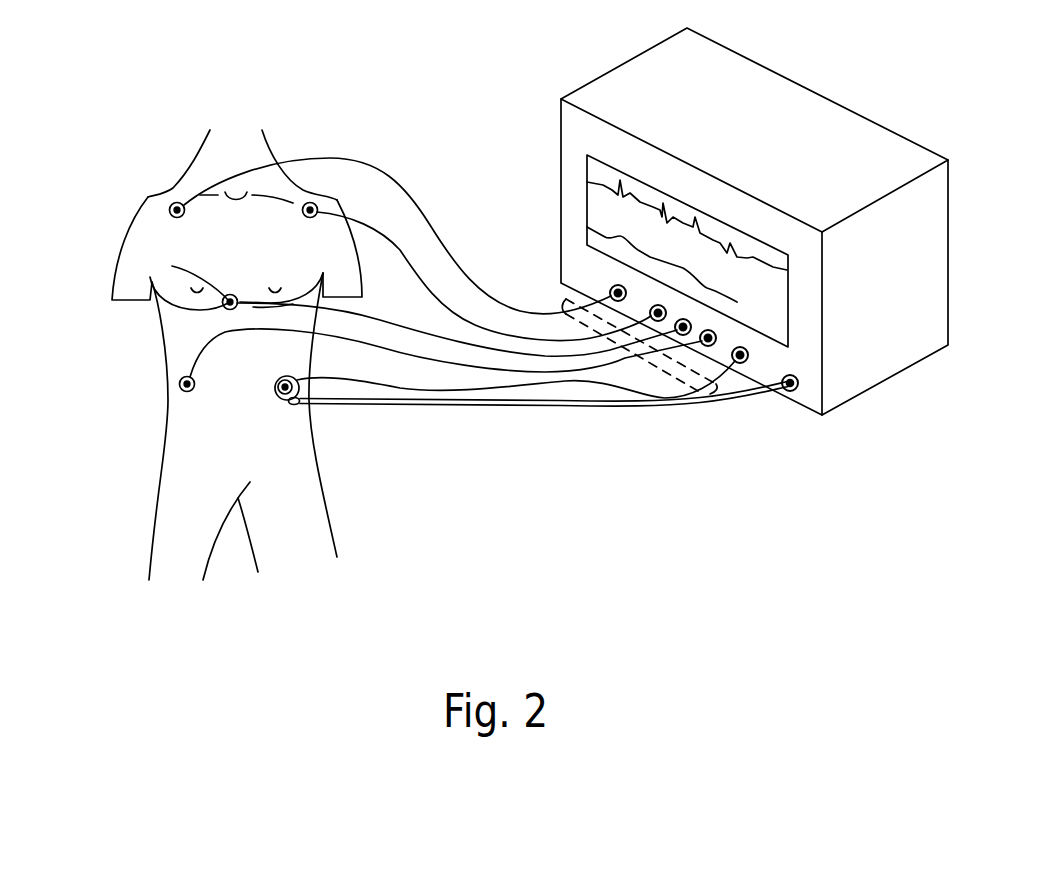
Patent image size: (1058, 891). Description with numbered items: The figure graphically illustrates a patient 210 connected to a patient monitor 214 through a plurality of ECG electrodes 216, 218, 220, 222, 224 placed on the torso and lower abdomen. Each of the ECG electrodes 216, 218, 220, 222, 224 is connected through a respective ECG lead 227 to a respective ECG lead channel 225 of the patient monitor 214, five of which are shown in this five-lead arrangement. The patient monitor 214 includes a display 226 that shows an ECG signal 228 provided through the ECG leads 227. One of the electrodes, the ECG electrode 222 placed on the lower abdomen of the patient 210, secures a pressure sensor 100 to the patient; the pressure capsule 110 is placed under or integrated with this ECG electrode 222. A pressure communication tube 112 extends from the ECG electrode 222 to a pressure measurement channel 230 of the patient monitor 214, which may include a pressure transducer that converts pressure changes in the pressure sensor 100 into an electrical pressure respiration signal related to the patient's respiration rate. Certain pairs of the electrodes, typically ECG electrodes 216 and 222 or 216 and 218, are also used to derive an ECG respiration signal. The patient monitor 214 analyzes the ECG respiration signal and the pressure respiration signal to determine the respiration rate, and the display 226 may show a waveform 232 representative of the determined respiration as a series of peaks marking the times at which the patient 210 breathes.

The pressure sensor 100 is at (330, 414).
The pressure capsule 110 is at (276, 389).
The pressure communication tube 112 is at (746, 404).
The patient 210 is at (150, 207).
The patient monitor 214 is at (641, 54).
The ECG electrode 216 is at (173, 212).
The ECG electrode 218 is at (304, 211).
The ECG electrode 220 is at (181, 384).
The ECG electrode 222 is at (288, 378).
The ECG electrode 224 is at (192, 274).
The ECG lead channels 225 is at (597, 283).
The display 226 is at (588, 157).
The ECG leads 227 is at (663, 374).
The ECG signal 228 is at (665, 210).
The pressure measurement channel 230 is at (789, 392).
The waveform 232 is at (737, 302).